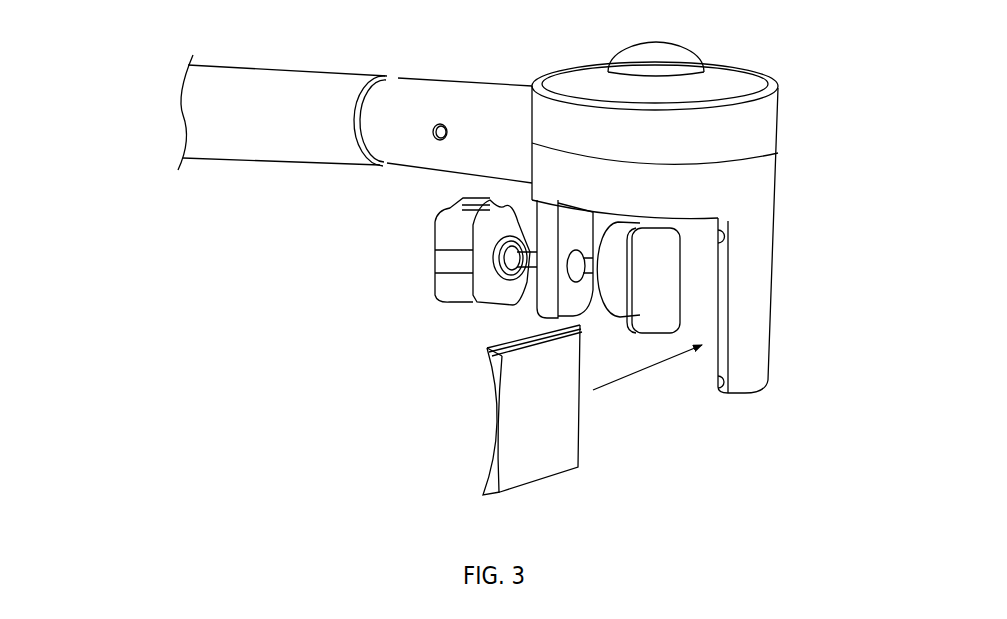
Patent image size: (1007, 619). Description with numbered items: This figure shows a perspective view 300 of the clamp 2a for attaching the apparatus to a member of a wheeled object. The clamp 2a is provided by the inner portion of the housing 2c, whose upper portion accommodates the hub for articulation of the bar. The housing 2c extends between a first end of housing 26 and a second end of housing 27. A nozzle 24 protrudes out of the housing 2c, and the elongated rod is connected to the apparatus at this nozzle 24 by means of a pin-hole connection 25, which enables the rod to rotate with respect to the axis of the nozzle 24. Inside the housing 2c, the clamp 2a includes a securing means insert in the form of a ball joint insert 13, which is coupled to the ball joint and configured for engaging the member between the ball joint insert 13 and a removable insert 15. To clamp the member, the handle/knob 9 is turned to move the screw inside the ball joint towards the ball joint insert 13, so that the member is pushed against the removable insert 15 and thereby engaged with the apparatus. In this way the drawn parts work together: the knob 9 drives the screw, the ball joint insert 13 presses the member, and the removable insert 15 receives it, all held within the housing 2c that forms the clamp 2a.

The perspective view 300 is at (137, 68).
The nozzle 24 is at (402, 148).
The pin-hole connection 25 is at (438, 123).
The clamp 2a is at (862, 37).
The housing 2c is at (778, 168).
The second end of housing 27 is at (740, 257).
The first end of housing 26 is at (535, 203).
The handle/knob 9 is at (427, 270).
The ball joint insert 13 is at (625, 282).
The removable insert 15 is at (530, 440).